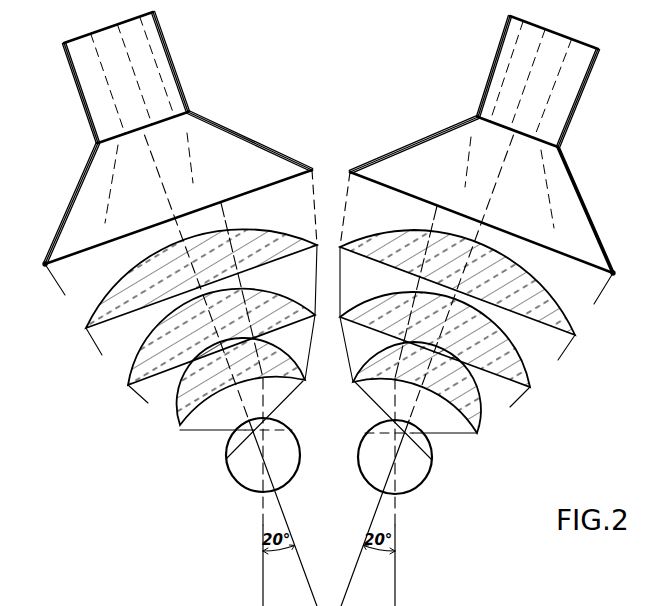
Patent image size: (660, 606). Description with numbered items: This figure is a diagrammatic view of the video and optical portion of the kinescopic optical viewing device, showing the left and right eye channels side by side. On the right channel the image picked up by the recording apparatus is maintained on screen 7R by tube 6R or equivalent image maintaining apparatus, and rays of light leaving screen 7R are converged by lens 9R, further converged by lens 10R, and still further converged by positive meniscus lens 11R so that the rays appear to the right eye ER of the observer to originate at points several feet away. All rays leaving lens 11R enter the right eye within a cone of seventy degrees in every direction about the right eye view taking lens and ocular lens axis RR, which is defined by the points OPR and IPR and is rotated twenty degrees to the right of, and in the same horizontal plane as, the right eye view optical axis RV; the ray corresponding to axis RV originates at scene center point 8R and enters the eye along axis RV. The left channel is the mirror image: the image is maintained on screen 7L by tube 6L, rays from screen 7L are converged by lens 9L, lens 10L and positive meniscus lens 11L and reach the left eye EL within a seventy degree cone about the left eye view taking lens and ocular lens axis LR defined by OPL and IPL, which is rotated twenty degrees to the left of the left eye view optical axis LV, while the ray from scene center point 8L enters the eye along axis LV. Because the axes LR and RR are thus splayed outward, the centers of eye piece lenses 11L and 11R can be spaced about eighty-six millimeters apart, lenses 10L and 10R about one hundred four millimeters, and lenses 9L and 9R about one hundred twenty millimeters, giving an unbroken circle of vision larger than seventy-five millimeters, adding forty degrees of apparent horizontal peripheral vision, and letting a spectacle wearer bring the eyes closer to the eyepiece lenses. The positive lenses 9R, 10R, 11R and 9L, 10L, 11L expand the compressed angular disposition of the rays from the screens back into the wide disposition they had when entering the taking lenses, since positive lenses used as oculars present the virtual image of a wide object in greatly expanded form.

The tube 6L is at (80, 93).
The screen 7L is at (45, 265).
The scene center point 8L is at (221, 203).
The lens 9L is at (86, 328).
The lens 10L is at (128, 385).
The positive meniscus lens 11L is at (180, 425).
The object point of left axis OPL is at (219, 432).
The left eye EL is at (229, 464).
The image point of left axis IPL is at (281, 408).
The left eye view optical axis LV is at (261, 570).
The left eye view taking lens and ocular lens axis LR is at (303, 568).
The tube 6R is at (576, 108).
The screen 7R is at (613, 275).
The scene center point 8R is at (440, 207).
The lens 9R is at (575, 335).
The lens 10R is at (530, 387).
The positive meniscus lens 11R is at (477, 433).
The object point of right axis OPR is at (445, 434).
The right eye ER is at (426, 471).
The image point of right axis IPR is at (366, 397).
The right eye view taking lens and ocular lens axis RR is at (367, 569).
The right eye view optical axis RV is at (409, 570).